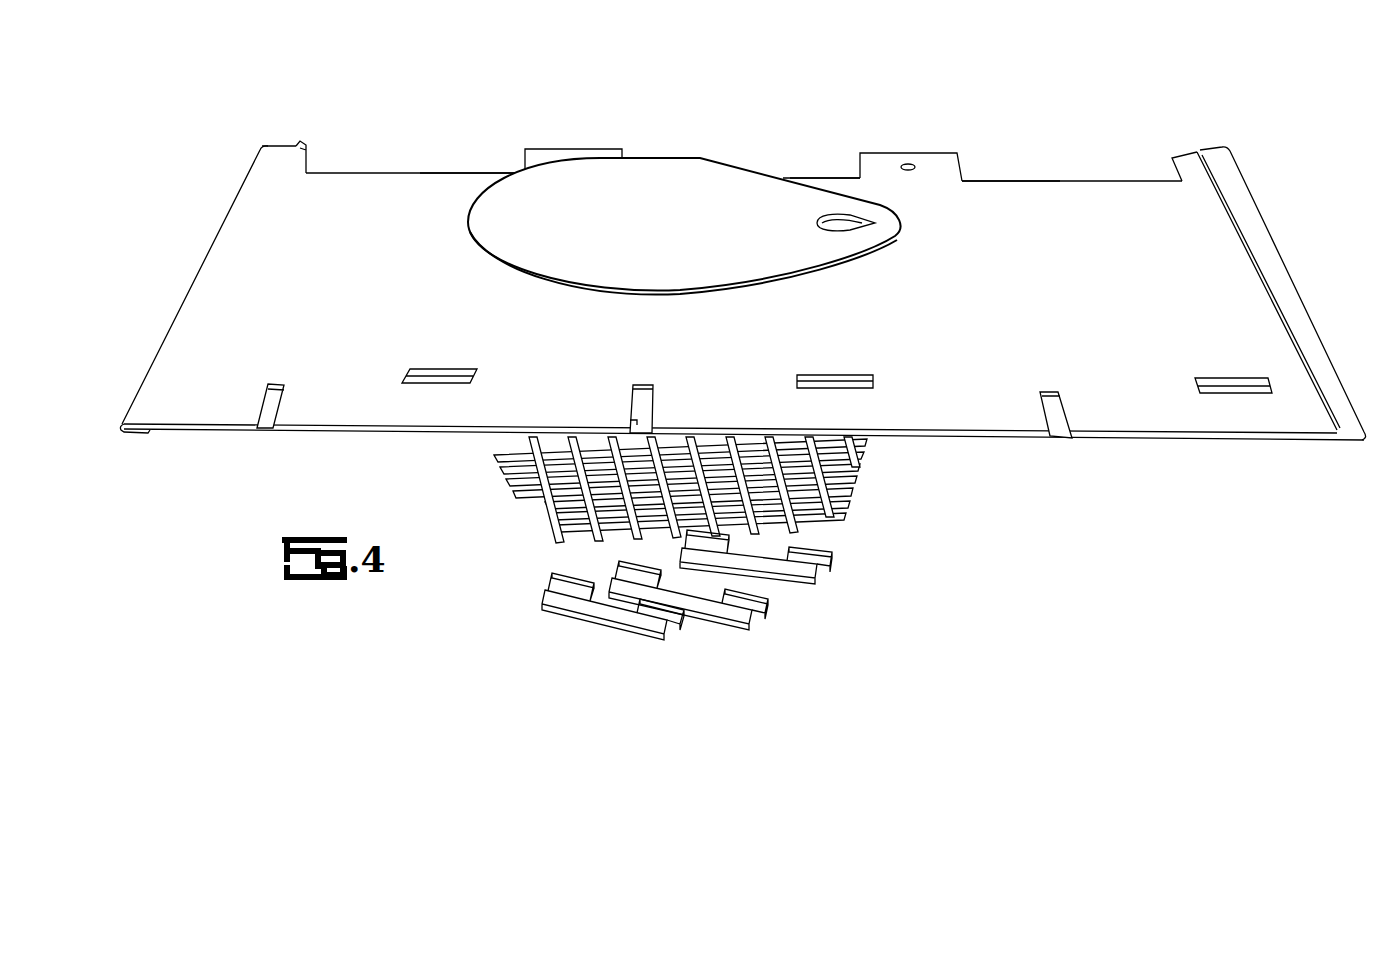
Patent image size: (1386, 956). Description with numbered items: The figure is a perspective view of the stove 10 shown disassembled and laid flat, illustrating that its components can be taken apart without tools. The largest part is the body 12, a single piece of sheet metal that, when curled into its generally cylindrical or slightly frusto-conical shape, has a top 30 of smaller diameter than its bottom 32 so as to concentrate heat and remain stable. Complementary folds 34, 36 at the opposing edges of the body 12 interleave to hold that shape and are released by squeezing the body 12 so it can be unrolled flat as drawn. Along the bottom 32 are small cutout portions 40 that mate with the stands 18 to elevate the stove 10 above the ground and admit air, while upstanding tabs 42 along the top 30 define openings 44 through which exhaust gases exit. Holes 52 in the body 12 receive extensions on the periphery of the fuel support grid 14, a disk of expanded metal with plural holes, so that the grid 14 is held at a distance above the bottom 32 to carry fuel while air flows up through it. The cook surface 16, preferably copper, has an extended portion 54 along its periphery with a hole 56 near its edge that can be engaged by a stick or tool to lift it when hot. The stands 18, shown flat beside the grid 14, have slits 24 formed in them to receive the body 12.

The stove 10 is at (421, 101).
The body 12 is at (250, 253).
The fuel support grid 14 is at (860, 462).
The cook surface 16 is at (680, 195).
The stands 18 is at (617, 618).
The slits 24 is at (588, 600).
The top 30 is at (1070, 183).
The bottom 32 is at (950, 437).
The fold 34 is at (170, 338).
The fold 36 is at (1258, 247).
The cutout portions 40 is at (282, 414).
The upstanding tabs 42 is at (296, 148).
The openings 44 is at (485, 170).
The holes 52 is at (430, 383).
The extended portion 54 is at (880, 245).
The hole 56 is at (860, 224).